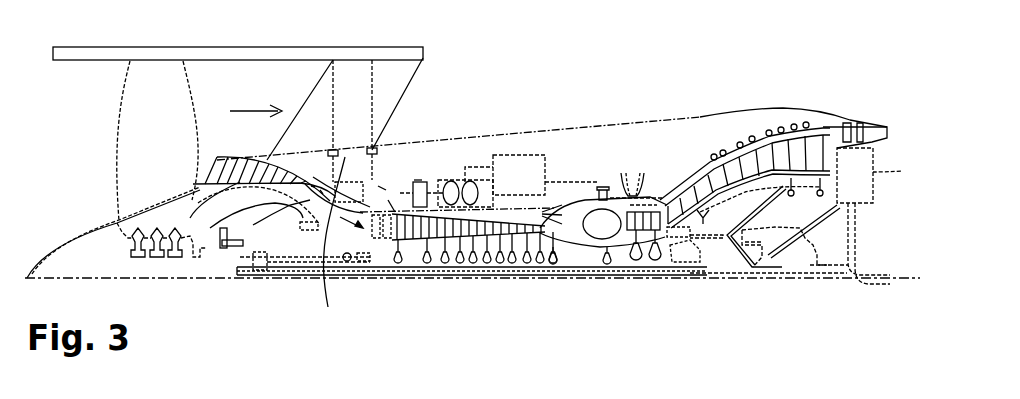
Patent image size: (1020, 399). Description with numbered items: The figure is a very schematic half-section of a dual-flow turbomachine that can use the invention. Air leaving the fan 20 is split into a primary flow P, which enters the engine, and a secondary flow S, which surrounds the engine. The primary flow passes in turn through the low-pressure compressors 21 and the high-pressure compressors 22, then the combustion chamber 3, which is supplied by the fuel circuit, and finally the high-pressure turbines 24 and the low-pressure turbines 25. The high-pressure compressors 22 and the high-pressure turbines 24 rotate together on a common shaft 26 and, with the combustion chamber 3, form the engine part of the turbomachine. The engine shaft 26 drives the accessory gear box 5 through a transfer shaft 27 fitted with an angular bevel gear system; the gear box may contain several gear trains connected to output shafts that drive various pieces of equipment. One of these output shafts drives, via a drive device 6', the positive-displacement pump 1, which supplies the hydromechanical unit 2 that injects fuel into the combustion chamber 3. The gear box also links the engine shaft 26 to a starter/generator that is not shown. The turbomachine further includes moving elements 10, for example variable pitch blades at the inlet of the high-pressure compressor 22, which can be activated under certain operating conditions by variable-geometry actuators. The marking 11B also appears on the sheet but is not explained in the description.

The fan 20 is at (151, 115).
The primary flow P is at (196, 167).
The secondary flow S is at (254, 110).
The low-pressure compressors 21 is at (265, 162).
The moving elements 10 is at (392, 205).
The accessory gear box 5 is at (383, 188).
The drive device 6' is at (435, 130).
The positive-displacement pump 1 is at (451, 190).
The hydromechanical unit 2 is at (513, 178).
The combustion chamber 3 is at (602, 222).
The high-pressure turbines 24 is at (695, 184).
The low-pressure turbines 25 is at (749, 131).
The transfer shaft 27 is at (333, 190).
The common shaft 26 is at (375, 268).
The high-pressure compressors 22 is at (453, 287).
The axis reference 11B is at (493, 391).